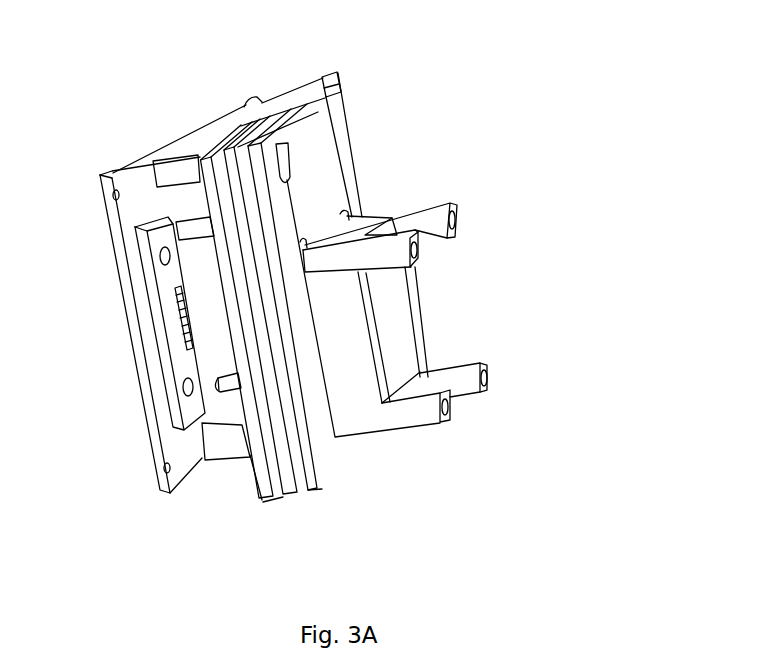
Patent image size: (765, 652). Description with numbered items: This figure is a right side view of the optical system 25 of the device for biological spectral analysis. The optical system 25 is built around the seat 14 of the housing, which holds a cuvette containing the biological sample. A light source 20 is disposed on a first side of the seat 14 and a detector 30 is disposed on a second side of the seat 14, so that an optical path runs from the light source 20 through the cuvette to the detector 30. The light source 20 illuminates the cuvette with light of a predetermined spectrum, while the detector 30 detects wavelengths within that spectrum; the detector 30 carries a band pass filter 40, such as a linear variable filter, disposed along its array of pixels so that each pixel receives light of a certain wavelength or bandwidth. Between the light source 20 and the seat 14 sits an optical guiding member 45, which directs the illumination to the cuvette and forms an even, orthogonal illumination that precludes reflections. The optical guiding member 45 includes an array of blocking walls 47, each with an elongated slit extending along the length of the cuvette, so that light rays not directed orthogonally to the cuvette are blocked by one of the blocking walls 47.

The seat 14 is at (180, 205).
The light source 20 is at (403, 328).
The optical system 25 is at (482, 185).
The detector 30 is at (152, 317).
The band pass filter 40 is at (213, 313).
The optical guiding member 45 is at (310, 153).
The blocking walls 47 is at (263, 502).